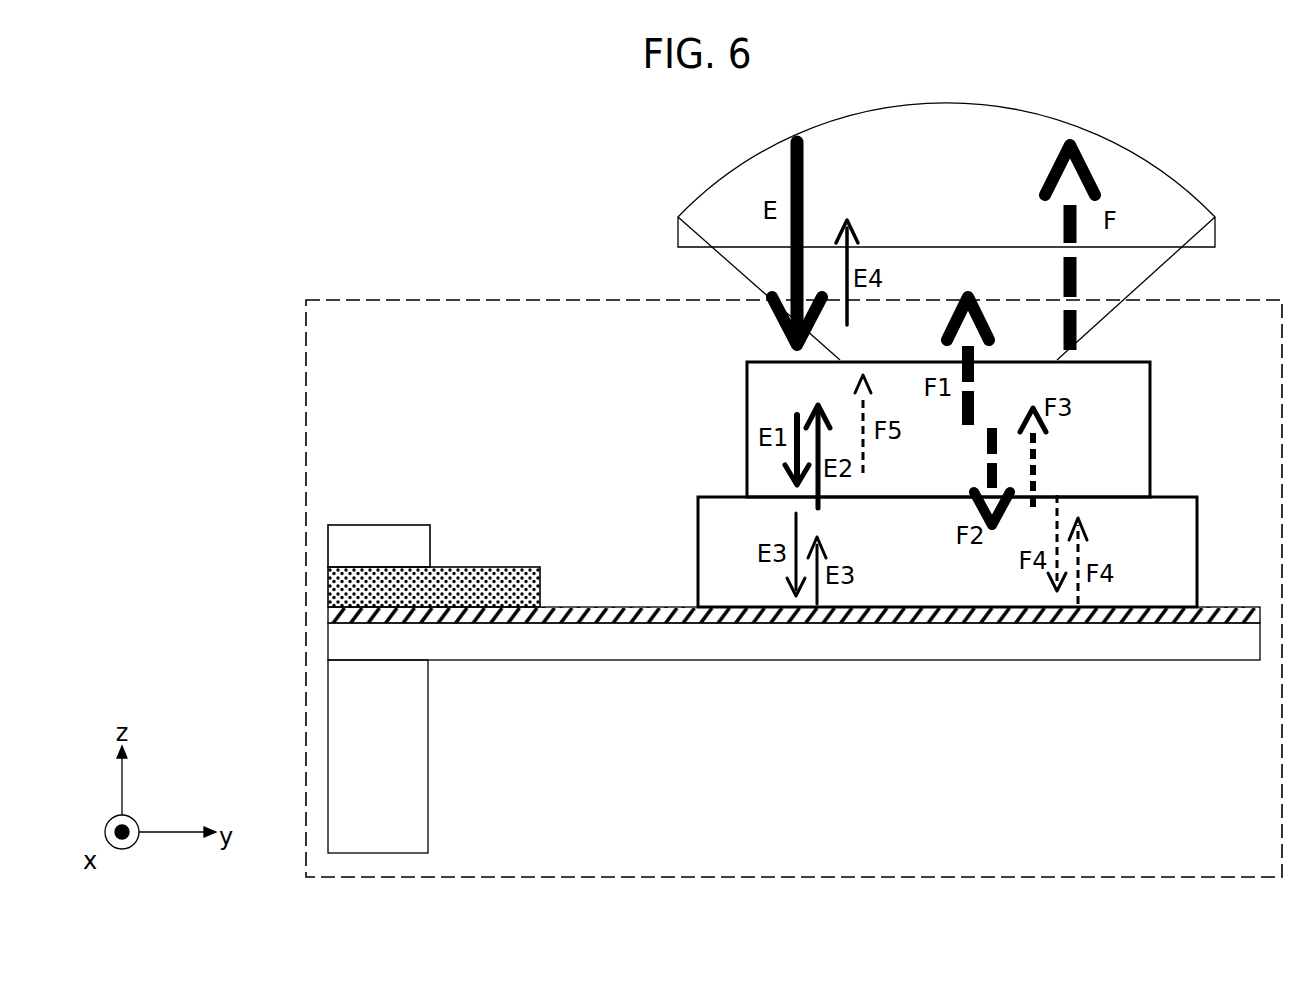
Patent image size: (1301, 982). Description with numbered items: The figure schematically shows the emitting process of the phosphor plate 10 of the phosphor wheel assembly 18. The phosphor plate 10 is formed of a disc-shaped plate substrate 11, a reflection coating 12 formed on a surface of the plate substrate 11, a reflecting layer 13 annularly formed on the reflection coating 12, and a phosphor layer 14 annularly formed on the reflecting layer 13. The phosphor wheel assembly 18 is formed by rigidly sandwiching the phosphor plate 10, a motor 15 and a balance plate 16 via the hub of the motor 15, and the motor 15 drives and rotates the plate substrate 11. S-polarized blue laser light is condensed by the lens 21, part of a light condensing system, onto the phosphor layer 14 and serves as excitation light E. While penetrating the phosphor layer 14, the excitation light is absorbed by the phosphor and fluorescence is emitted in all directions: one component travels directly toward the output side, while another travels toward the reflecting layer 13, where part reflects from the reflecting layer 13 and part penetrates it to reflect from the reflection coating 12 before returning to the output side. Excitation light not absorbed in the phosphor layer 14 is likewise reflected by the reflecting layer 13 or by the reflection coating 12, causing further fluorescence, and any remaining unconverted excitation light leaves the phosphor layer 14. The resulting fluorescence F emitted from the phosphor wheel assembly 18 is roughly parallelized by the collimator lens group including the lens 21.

The phosphor plate 10 is at (752, 607).
The plate substrate 11 is at (328, 637).
The reflection coating 12 is at (328, 616).
The reflecting layer 13 is at (698, 535).
The phosphor layer 14 is at (747, 472).
The motor 15 is at (428, 781).
The balance plate 16 is at (328, 580).
The phosphor wheel assembly 18 is at (394, 300).
The lens 21 is at (1188, 181).